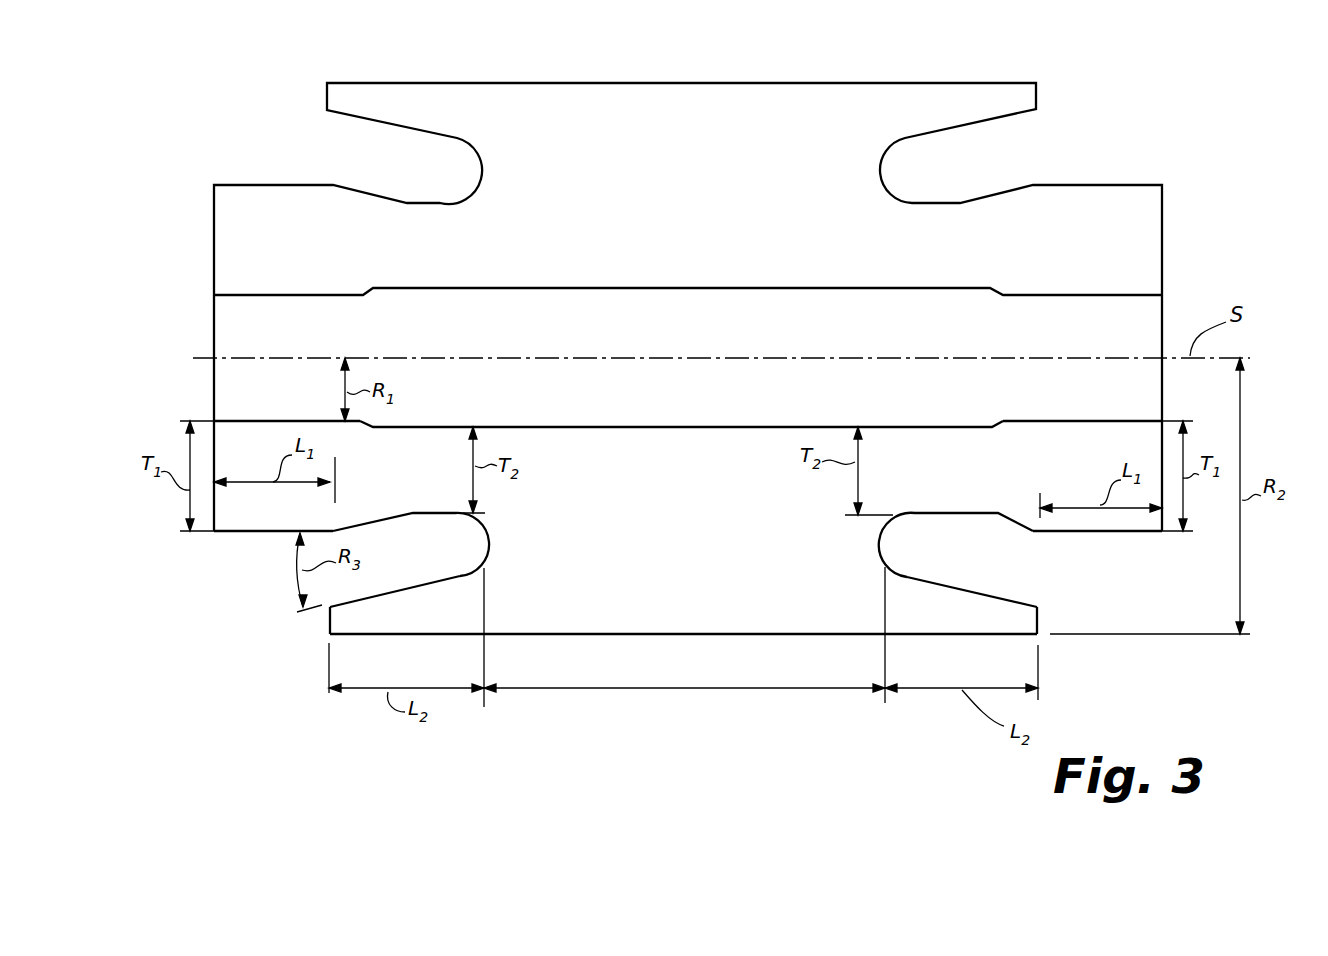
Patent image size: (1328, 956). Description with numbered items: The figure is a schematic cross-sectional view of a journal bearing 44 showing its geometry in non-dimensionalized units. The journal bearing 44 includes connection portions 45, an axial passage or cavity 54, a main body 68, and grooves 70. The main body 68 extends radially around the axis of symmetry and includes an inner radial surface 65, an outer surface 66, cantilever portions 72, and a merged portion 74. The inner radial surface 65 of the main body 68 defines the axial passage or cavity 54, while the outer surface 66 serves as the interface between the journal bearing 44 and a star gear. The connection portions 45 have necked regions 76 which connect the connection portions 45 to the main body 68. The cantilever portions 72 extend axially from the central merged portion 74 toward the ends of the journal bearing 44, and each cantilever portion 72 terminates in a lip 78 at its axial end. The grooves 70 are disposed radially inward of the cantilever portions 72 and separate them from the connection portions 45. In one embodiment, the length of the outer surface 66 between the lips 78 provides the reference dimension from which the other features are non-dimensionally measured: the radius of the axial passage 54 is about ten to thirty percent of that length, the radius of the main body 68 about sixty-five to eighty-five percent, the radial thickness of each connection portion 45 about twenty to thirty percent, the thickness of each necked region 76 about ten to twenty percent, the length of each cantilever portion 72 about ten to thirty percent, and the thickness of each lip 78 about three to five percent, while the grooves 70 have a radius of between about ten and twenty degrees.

The journal bearing 44 is at (302, 165).
The connection portions 45 is at (232, 440).
The axial passage or cavity 54 is at (283, 316).
The inner radial surface 65 is at (1095, 421).
The outer surface 66 is at (728, 634).
The main body 68 is at (699, 535).
The grooves 70 is at (268, 557).
The cantilever portions 72 is at (462, 608).
The merged portion 74 is at (668, 688).
The necked regions 76 is at (400, 450).
The lip 78 is at (328, 620).